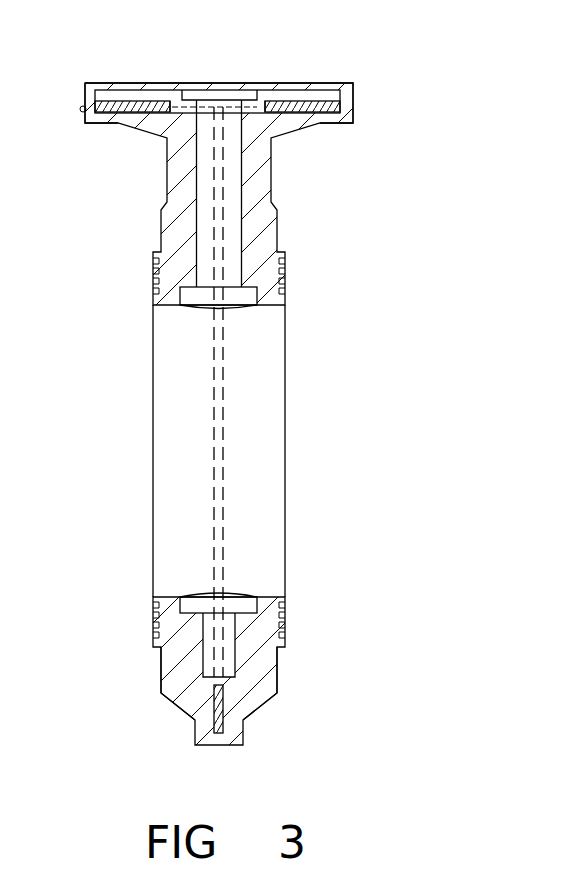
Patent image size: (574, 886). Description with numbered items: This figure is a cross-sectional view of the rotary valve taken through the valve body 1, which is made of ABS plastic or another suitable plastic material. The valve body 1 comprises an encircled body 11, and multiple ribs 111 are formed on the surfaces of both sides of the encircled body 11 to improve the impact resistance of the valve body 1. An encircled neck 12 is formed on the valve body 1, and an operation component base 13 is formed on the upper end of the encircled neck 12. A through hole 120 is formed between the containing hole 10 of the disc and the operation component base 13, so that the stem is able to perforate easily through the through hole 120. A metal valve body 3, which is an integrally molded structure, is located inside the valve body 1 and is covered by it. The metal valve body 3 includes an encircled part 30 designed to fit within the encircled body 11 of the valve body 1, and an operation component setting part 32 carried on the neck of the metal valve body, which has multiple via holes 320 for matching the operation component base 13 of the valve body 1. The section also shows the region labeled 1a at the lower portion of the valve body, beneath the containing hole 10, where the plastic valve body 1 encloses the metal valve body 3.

The valve body 1 is at (285, 468).
The containing hole 10 is at (245, 422).
The encircled body 11 is at (247, 747).
The ribs 111 is at (160, 679).
The encircled neck 12 is at (165, 158).
The through hole 120 is at (203, 258).
The operation component base 13 is at (355, 100).
The lower bore 1a is at (210, 638).
The metal valve body 3 is at (313, 127).
The encircled part 30 is at (243, 720).
The operation component setting part 32 is at (127, 104).
The via holes 320 is at (175, 100).